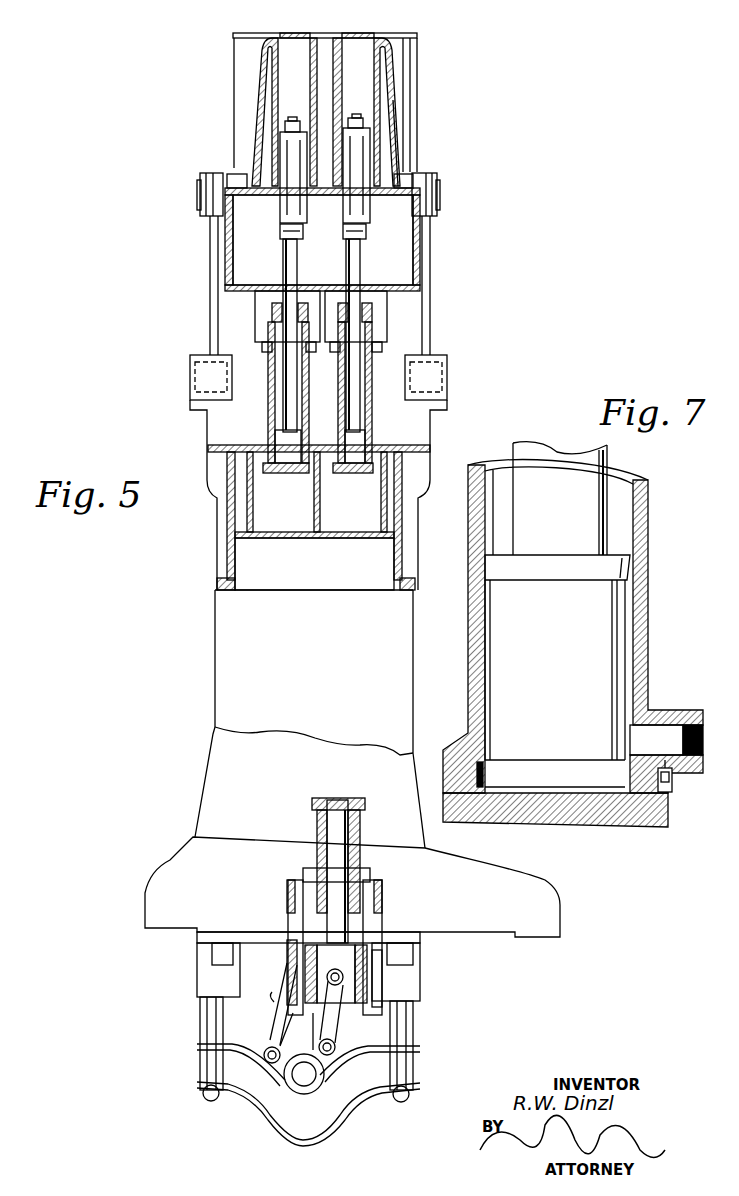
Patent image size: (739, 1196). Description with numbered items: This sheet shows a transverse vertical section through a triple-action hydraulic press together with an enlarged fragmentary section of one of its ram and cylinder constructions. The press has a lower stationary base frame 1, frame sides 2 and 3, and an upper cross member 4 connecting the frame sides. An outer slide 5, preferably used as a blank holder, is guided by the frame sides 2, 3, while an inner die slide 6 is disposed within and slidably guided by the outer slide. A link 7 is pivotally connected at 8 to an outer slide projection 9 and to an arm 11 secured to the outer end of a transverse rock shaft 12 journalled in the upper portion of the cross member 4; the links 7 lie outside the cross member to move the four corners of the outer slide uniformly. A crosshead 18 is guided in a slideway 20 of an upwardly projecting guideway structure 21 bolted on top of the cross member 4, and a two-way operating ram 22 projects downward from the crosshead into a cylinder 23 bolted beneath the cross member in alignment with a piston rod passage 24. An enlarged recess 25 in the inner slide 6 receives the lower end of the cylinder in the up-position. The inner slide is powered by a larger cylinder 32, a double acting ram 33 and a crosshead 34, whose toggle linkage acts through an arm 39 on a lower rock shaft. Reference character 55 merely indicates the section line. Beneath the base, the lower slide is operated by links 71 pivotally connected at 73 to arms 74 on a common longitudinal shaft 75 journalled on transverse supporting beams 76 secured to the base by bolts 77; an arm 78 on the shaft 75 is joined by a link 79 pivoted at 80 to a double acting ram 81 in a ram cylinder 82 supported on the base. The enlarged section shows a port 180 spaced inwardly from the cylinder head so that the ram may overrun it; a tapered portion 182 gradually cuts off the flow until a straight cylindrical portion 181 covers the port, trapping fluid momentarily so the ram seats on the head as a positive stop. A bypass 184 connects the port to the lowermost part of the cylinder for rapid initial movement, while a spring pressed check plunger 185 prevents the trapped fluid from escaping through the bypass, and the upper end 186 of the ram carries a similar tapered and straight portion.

In FIG. 5, the lower stationary base frame 1 is at (193, 852).
In FIG. 5, the frame side 2 is at (216, 629).
In FIG. 5, the frame side 3 is at (214, 760).
In FIG. 5, the upper cross member 4 is at (421, 245).
In FIG. 5, the outer slide 5 is at (235, 568).
In FIG. 5, the inner die slide 6 is at (349, 540).
In FIG. 5, the link 7 is at (210, 277).
In FIG. 5, the pivotal connection 8 is at (195, 377).
In FIG. 5, the outer slide projection 9 is at (192, 404).
In FIG. 5, the arm 11 is at (201, 176).
In FIG. 5, the transverse rock shaft 12 is at (198, 194).
In FIG. 5, the crosshead 18 is at (364, 158).
In FIG. 5, the slideway 20 is at (374, 101).
In FIG. 5, the guideway structure 21 is at (400, 128).
In FIG. 5, the two-way operating ram 22 is at (356, 439).
In FIG. 7, the two-way operating ram 22 is at (622, 634).
In FIG. 5, the cylinder 23 is at (372, 404).
In FIG. 7, the cylinder 23 is at (641, 524).
In FIG. 5, the piston rod passage 24 is at (400, 265).
In FIG. 5, the enlarged recess 25 is at (375, 505).
In FIG. 5, the cylinder 32 is at (269, 388).
In FIG. 5, the double acting ram 33 is at (278, 437).
In FIG. 5, the crosshead 34 is at (281, 213).
In FIG. 5, the arm 39 is at (280, 102).
In FIG. 5, the top frame 55 is at (240, 52).
In FIG. 5, the link 71 is at (277, 1032).
In FIG. 5, the pivotal connection 73 is at (266, 1060).
In FIG. 5, the arm 74 is at (290, 1046).
In FIG. 5, the longitudinal shaft 75 is at (308, 1068).
In FIG. 5, the transverse supporting beam 76 is at (350, 1108).
In FIG. 5, the bolt 77 is at (203, 1093).
In FIG. 5, the arm 78 is at (336, 1057).
In FIG. 5, the link 79 is at (331, 1022).
In FIG. 5, the pivotal connection 80 is at (344, 977).
In FIG. 5, the double acting ram 81 is at (365, 820).
In FIG. 5, the ram cylinder 82 is at (358, 857).
In FIG. 7, the port 180 is at (648, 720).
In FIG. 7, the straight cylindrical portion 181 is at (486, 725).
In FIG. 7, the tapered portion 182 is at (478, 775).
In FIG. 7, the bypass 184 is at (658, 805).
In FIG. 7, the spring pressed check plunger 185 is at (673, 780).
In FIG. 7, the upper end of ram 186 is at (488, 565).